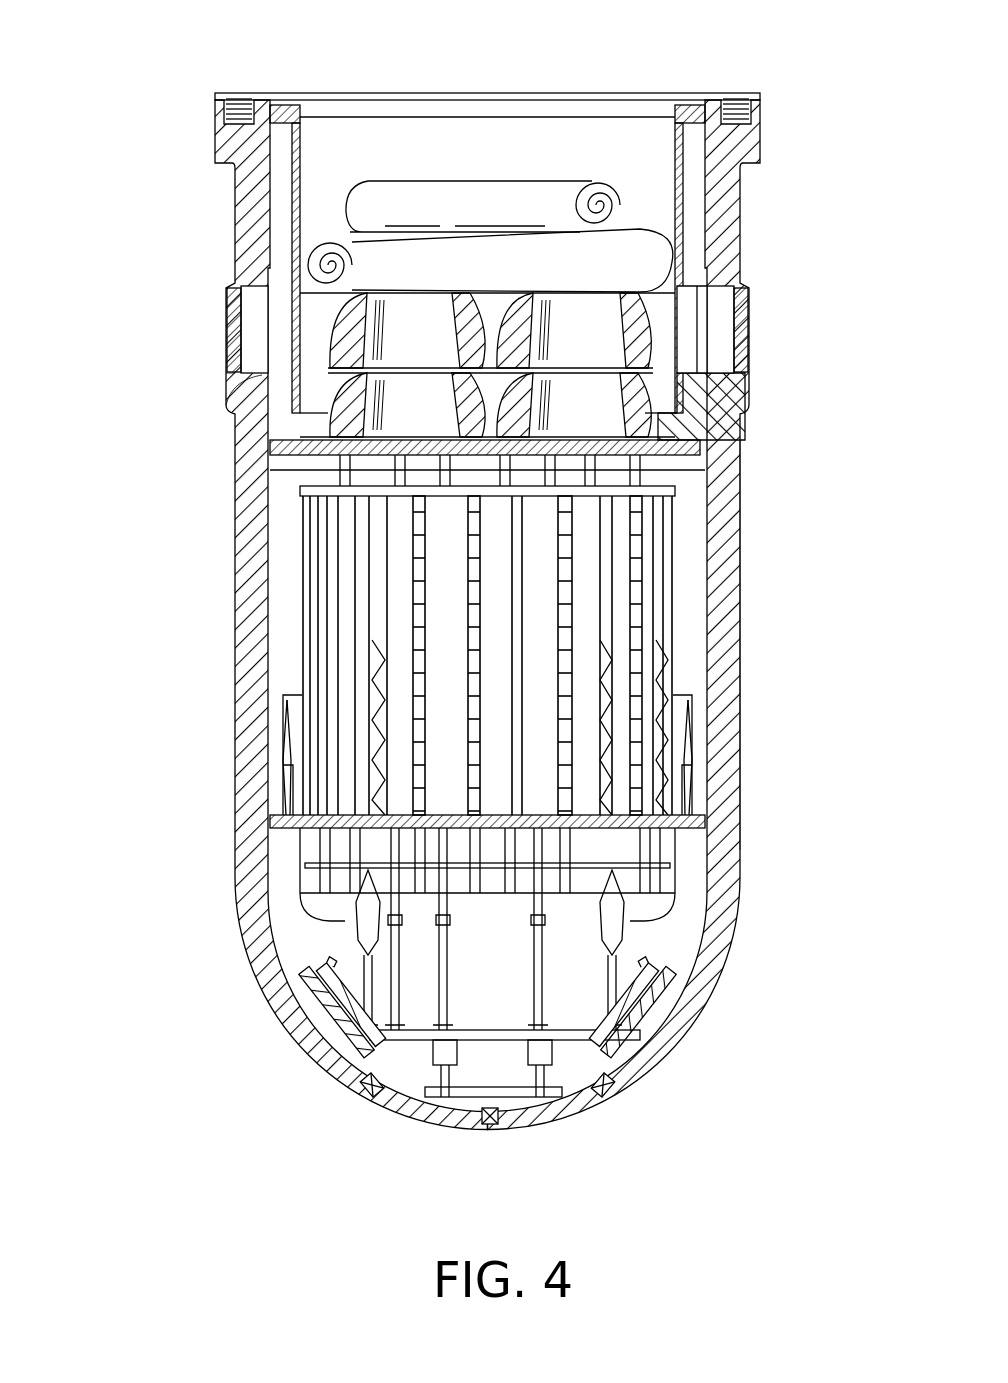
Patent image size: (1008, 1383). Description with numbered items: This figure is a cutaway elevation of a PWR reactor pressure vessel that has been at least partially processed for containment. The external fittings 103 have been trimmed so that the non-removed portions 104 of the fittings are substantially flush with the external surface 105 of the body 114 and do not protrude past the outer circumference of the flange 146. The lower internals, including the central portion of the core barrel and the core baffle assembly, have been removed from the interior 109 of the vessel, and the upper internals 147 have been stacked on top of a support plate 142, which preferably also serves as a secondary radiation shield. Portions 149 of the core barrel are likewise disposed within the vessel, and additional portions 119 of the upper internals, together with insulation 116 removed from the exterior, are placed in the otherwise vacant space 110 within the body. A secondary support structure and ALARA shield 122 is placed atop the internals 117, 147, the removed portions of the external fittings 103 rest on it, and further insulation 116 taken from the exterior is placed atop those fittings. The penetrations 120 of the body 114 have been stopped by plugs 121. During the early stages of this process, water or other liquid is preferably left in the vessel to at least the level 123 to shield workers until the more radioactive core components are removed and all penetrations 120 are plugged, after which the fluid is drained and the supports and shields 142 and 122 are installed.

The external fittings 103 is at (390, 347).
The non-removed portions of the external fittings 104 is at (227, 392).
The external surface 105 is at (741, 555).
The interior 109 is at (455, 152).
The cavity 110 is at (573, 162).
The body 114 is at (236, 706).
The insulation 116 is at (465, 222).
The internals 117 is at (690, 722).
The additional portions of the upper internals 119 is at (328, 1013).
The penetrations 120 is at (257, 305).
The plugs 121 is at (226, 322).
The secondary support structure and ALARA shield 122 is at (736, 432).
The liquid level 123 is at (702, 470).
The support plate 142 is at (700, 845).
The flange 146 is at (216, 128).
The upper internals 147 is at (567, 572).
The portions of core barrel 149 is at (708, 810).